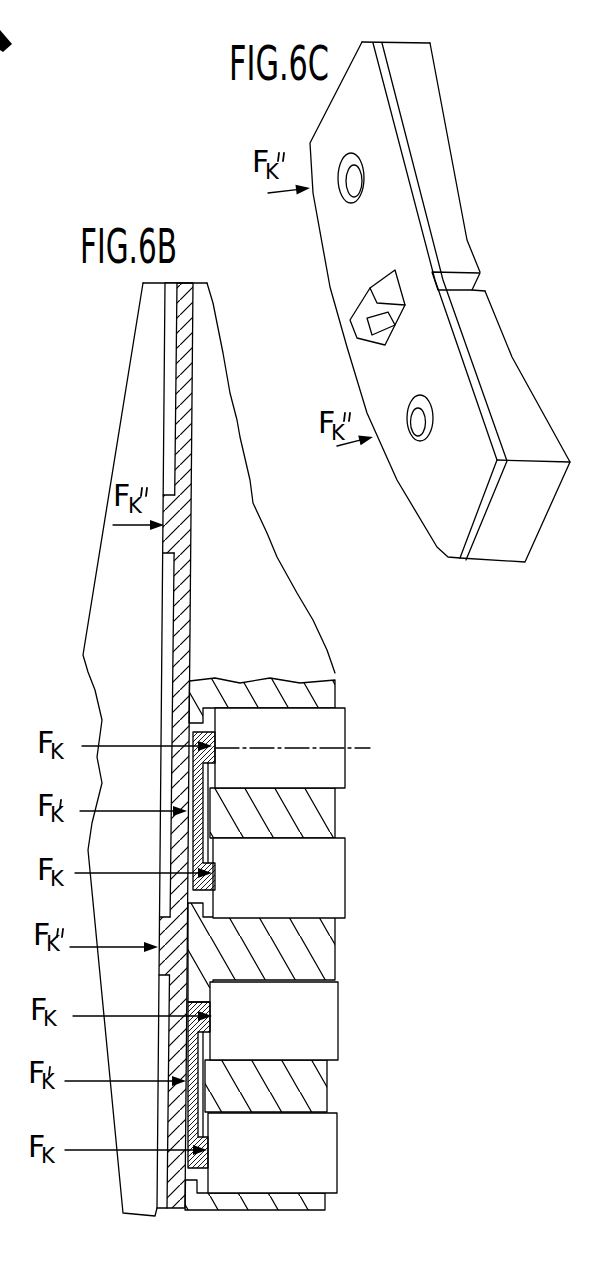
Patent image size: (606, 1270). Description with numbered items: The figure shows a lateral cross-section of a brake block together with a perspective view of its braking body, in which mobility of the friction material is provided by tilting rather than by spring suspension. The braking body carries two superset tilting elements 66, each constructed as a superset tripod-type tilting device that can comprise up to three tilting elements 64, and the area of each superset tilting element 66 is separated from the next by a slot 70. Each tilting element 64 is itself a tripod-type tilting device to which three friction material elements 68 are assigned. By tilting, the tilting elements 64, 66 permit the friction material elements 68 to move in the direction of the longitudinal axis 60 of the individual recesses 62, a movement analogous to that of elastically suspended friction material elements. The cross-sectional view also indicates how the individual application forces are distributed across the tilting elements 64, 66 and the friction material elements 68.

In FIG. 6B, the longitudinal axis 60 is at (110, 733).
In FIG. 6B, the individual recess 62 is at (297, 697).
In FIG. 6B, the tilting element 64 is at (193, 857).
In FIG. 6B, the superset tilting element 66 is at (178, 593).
In FIG. 6C, the superset tilting element 66 is at (347, 182).
In FIG. 6B, the friction material element 68 is at (330, 769).
In FIG. 6C, the slot 70 is at (474, 287).